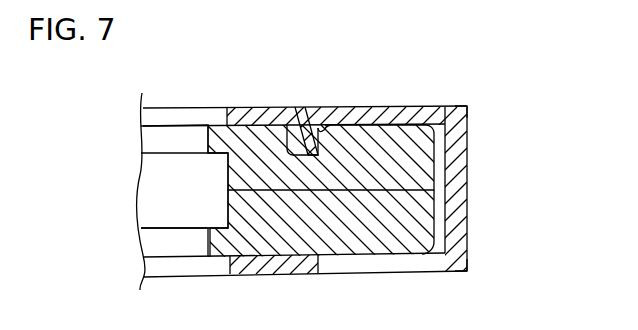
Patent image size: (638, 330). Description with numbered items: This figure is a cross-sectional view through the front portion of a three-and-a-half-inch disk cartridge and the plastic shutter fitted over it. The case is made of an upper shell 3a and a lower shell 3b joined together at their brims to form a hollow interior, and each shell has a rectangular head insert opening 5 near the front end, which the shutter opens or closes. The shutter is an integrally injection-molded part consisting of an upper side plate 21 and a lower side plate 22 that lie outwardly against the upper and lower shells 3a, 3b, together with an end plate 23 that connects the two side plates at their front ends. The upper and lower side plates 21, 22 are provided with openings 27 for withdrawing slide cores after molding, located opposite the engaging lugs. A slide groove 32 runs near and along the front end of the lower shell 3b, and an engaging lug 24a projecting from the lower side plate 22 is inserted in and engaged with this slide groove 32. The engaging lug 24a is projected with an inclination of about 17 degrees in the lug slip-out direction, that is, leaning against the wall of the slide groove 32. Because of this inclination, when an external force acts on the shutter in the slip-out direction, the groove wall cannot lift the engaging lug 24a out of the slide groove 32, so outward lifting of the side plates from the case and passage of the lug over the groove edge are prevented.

The lower side plate 22 is at (183, 107).
The upper side plate 21 is at (176, 278).
The end plate 23 is at (468, 122).
The openings for withdrawing slide cores 27 is at (444, 106).
The lower shell 3b is at (432, 160).
The upper shell 3a is at (430, 221).
The engaging lugs 24a is at (313, 108).
The slide groove 32 is at (332, 124).
The head insert opening 5 is at (152, 141).
The inclination angle of engaging lugs 17 is at (294, 157).